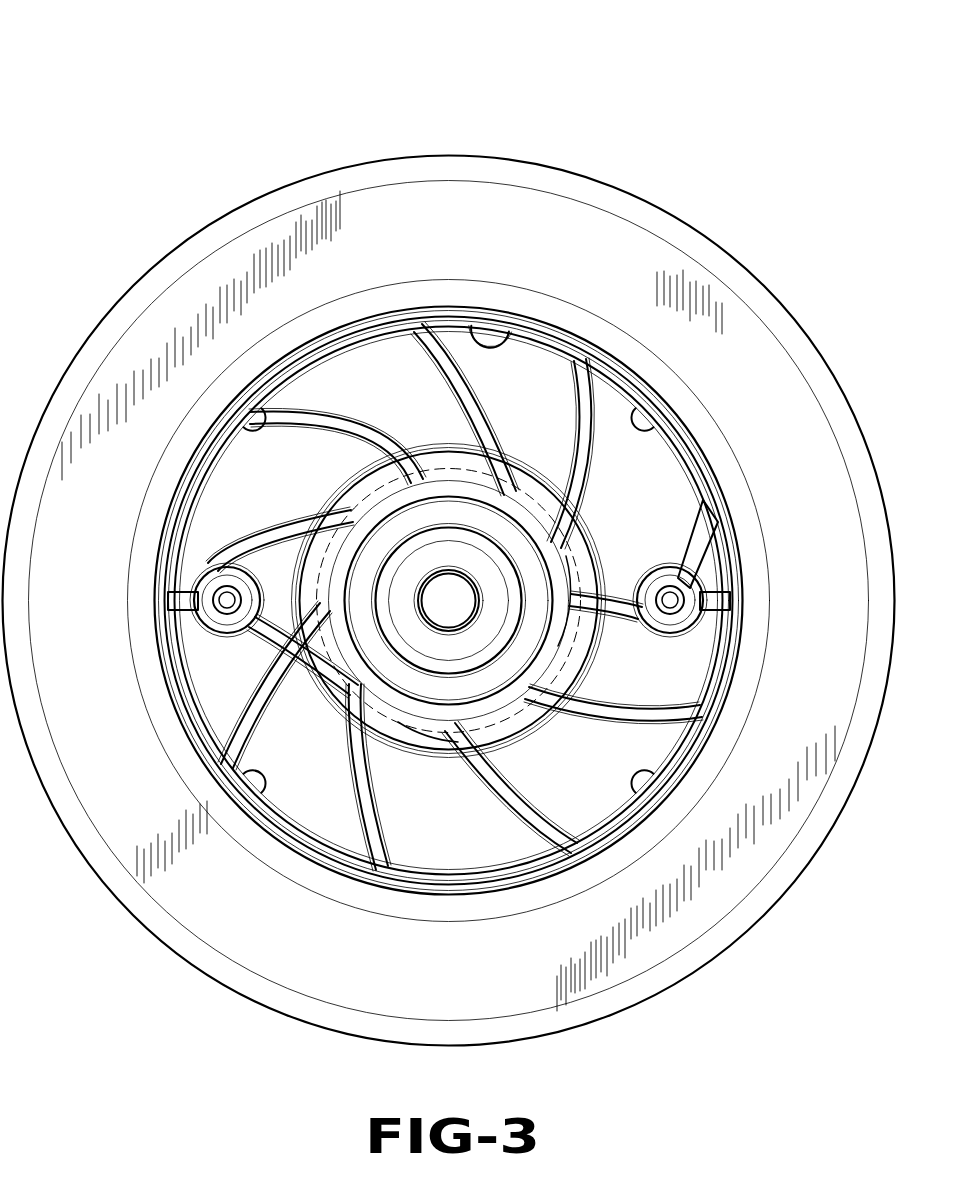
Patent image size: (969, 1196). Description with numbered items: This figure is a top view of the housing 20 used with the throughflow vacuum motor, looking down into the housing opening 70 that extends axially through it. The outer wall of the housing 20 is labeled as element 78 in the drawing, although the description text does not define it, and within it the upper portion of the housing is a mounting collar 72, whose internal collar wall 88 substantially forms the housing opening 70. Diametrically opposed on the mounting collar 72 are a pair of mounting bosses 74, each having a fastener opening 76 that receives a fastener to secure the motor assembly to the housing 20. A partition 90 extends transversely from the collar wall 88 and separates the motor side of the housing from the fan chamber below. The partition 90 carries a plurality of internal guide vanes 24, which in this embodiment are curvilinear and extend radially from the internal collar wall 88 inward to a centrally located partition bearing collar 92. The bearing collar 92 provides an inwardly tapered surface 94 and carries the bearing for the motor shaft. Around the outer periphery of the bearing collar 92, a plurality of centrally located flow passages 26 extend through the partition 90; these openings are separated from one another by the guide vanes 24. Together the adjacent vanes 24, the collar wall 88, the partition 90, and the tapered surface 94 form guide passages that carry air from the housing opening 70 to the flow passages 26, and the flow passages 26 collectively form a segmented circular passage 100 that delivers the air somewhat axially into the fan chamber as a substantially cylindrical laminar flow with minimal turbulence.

The housing 20 is at (646, 144).
The tire 78 is at (680, 218).
The mounting collar 72 is at (525, 302).
The internal collar wall 88 is at (488, 330).
The housing opening 70 is at (383, 368).
The internal guide vanes 24 is at (447, 396).
The flow passages 26 is at (370, 483).
The inwardly tapered surface 94 is at (510, 535).
The partition bearing collar 92 is at (575, 594).
The partition 90 is at (660, 494).
The mounting bosses 74 is at (258, 578).
The fastener opening 76 is at (226, 620).
The segmented circular passage 100 is at (417, 748).